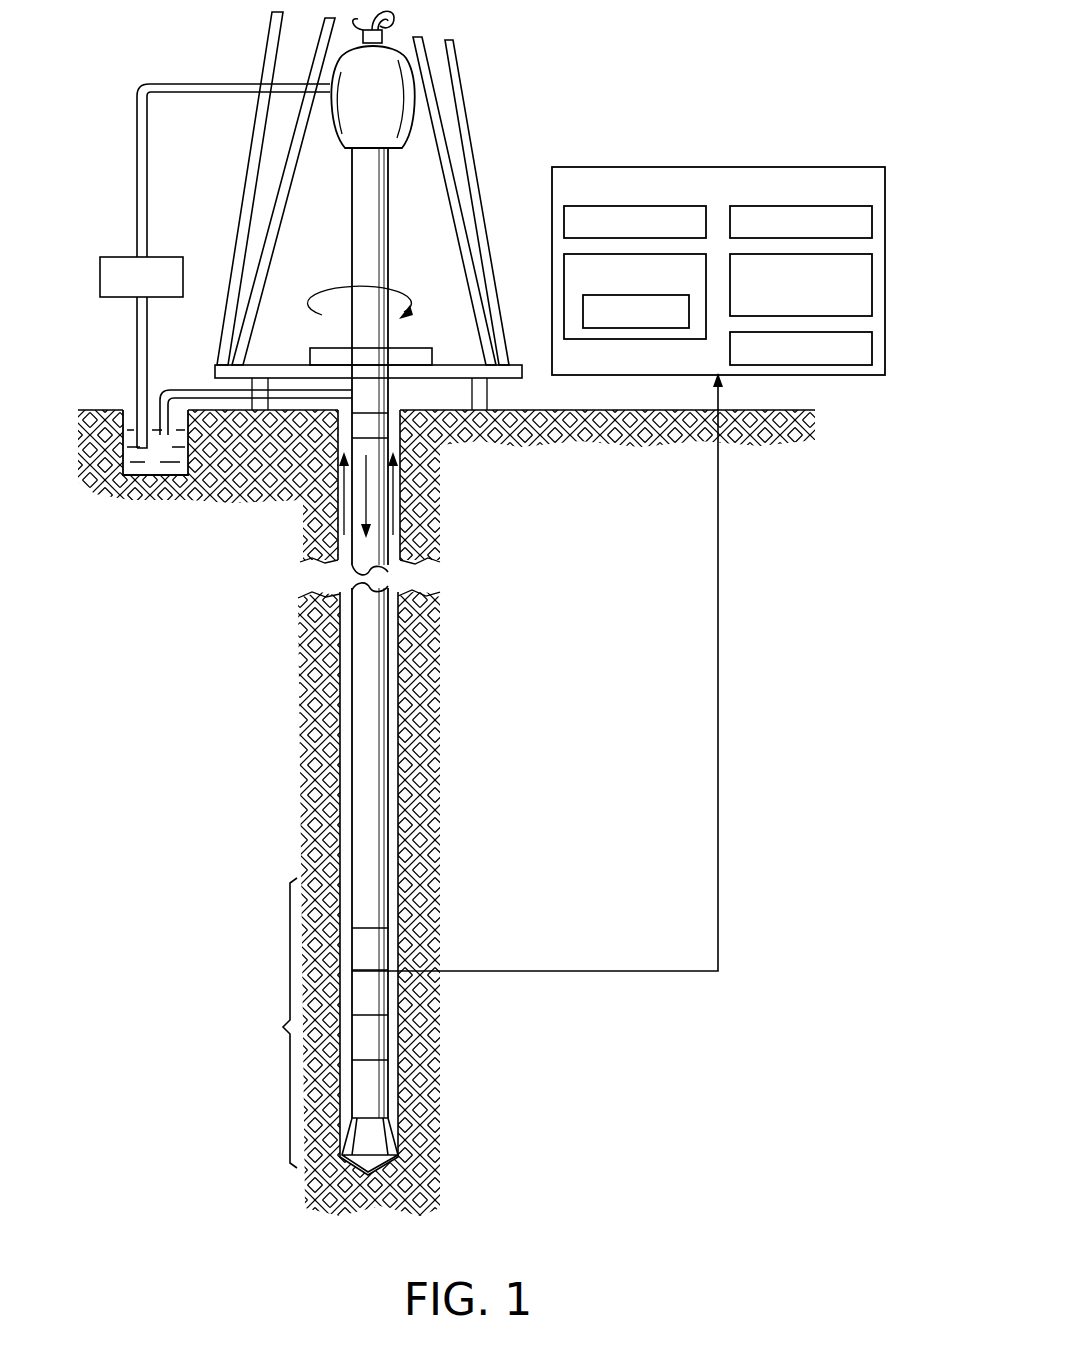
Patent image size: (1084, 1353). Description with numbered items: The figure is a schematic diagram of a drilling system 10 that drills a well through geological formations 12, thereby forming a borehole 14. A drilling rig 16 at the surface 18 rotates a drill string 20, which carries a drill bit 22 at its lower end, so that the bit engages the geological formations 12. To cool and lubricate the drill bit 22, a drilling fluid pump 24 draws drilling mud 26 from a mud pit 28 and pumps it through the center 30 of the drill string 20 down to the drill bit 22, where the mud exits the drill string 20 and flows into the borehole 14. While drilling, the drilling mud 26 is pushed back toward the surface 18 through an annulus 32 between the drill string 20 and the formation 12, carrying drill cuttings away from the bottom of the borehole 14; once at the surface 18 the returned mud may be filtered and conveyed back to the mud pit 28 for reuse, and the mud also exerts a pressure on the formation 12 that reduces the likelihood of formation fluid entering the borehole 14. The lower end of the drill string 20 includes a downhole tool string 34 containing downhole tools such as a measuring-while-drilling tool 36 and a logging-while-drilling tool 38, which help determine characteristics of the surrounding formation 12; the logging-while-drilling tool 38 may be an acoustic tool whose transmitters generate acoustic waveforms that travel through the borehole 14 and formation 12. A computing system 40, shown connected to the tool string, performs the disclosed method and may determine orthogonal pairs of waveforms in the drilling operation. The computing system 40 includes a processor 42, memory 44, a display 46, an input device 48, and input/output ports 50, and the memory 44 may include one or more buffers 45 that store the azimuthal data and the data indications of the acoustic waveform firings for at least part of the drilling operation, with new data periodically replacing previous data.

The drilling system 10 is at (539, 30).
The geological formations 12 is at (525, 771).
The borehole 14 is at (340, 740).
The drilling rig 16 is at (494, 103).
The surface 18 is at (546, 404).
The drill string 20 is at (365, 404).
The drill bit 22 is at (375, 1143).
The drilling fluid pump 24 is at (100, 268).
The drilling mud 26 is at (345, 500).
The mud pit 28 is at (158, 478).
The center of the drill string 30 is at (365, 505).
The annulus 32 is at (398, 412).
The downhole tool string 34 is at (272, 1023).
The measuring-while-drilling tool 36 is at (375, 945).
The logging-while-drilling tool 38 is at (375, 1030).
The computing system 40 is at (735, 143).
The processor 42 is at (564, 222).
The memory 44 is at (564, 296).
The buffers 45 is at (635, 328).
The display 46 is at (872, 218).
The input device 48 is at (872, 282).
The input/output ports 50 is at (872, 345).